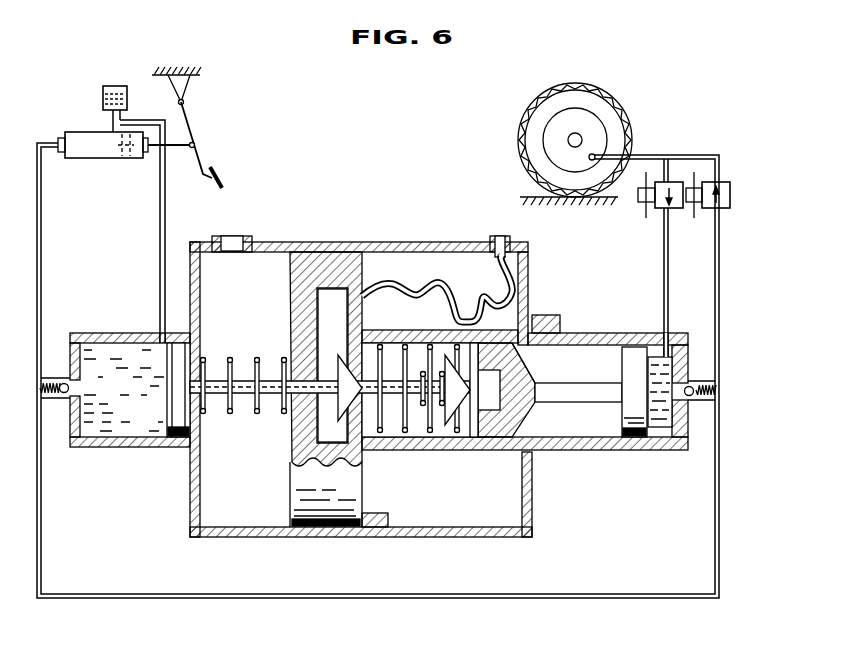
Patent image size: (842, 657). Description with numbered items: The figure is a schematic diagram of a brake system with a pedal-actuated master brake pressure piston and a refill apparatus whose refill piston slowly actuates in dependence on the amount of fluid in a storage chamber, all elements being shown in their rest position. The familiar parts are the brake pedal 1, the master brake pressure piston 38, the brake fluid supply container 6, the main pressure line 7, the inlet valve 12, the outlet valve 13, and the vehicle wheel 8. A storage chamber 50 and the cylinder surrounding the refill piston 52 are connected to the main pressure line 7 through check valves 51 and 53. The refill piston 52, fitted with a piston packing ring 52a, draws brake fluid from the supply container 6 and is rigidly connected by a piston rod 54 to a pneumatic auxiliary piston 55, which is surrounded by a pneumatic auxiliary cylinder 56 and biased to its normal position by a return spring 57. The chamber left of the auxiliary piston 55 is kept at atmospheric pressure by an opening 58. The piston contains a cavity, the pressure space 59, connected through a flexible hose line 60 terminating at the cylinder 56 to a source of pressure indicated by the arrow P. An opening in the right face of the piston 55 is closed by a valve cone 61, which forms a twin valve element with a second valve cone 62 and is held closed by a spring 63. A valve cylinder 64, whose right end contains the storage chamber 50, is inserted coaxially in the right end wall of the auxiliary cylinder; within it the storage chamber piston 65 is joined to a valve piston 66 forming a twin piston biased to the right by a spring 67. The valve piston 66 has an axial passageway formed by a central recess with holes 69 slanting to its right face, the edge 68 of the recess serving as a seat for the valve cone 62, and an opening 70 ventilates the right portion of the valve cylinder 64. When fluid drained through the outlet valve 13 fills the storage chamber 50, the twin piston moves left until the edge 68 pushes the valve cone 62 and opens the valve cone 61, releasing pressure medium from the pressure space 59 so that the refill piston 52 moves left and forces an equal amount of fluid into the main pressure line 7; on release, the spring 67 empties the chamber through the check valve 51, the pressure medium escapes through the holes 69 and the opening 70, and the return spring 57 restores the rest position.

The brake pedal 1 is at (194, 129).
The brake fluid supply container 6 is at (103, 101).
The main pressure line 7 is at (258, 594).
The vehicle wheel 8 is at (603, 105).
The inlet valve 12 is at (706, 210).
The outlet valve 13 is at (660, 210).
The master brake pressure piston 38 is at (120, 150).
The storage chamber 50 is at (661, 405).
The check valve 51 is at (706, 405).
The refill piston 52 is at (167, 368).
The piston packing ring 52a is at (175, 435).
The check valve 53 is at (52, 398).
The piston rod 54 is at (244, 393).
The pneumatic auxiliary piston 55 is at (301, 290).
The pneumatic auxiliary cylinder 56 is at (247, 523).
The return spring 57 is at (234, 358).
The opening 58 is at (232, 248).
The pressure space 59 is at (325, 421).
The flexible hose line 60 is at (437, 282).
The valve cone 61 is at (343, 367).
The second valve cone 62 is at (439, 440).
The spring 63 is at (389, 354).
The valve cylinder 64 is at (480, 440).
The storage chamber piston 65 is at (636, 366).
The valve piston 66 is at (505, 440).
The spring 67 is at (394, 450).
The edge 68 is at (494, 400).
The holes 69 is at (524, 359).
The opening 70 is at (547, 320).
The pressure P is at (499, 233).